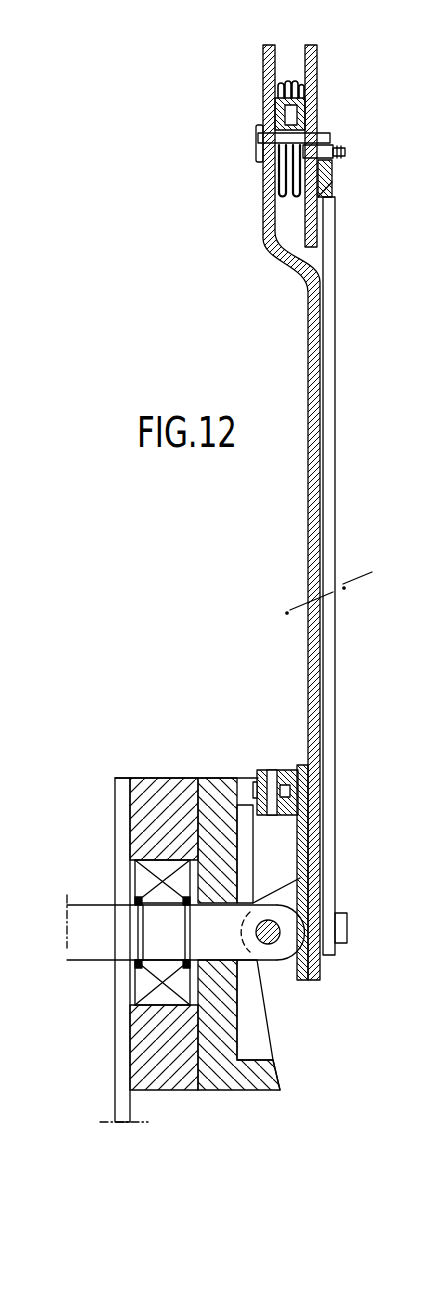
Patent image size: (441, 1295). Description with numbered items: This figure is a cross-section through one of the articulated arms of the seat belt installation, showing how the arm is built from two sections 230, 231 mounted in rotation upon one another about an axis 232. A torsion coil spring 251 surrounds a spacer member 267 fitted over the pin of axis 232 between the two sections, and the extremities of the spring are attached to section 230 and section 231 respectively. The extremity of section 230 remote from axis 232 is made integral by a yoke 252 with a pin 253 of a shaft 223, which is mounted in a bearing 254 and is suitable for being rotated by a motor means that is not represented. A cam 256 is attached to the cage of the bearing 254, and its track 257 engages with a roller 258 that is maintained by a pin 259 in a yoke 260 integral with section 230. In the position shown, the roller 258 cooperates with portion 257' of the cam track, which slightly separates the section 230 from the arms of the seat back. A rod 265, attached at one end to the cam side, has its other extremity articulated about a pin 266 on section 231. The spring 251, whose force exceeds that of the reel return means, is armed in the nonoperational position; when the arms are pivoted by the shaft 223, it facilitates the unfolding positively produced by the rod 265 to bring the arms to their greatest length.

The shaft 223 is at (85, 945).
The section 230 is at (313, 411).
The section 231 is at (318, 60).
The axis 232 is at (280, 140).
The torsion coil spring 251 is at (285, 193).
The yoke 252 is at (285, 965).
The pin 253 is at (272, 938).
The bearing 254 is at (148, 1090).
The cam 256 is at (255, 1083).
The track 257 is at (222, 753).
The portion 257' is at (328, 1076).
The roller 258 is at (286, 792).
The pin 259 is at (272, 813).
The yoke 260 is at (285, 770).
The rod 265 is at (328, 358).
The pin 266 is at (346, 152).
The spacer member 267 is at (308, 100).